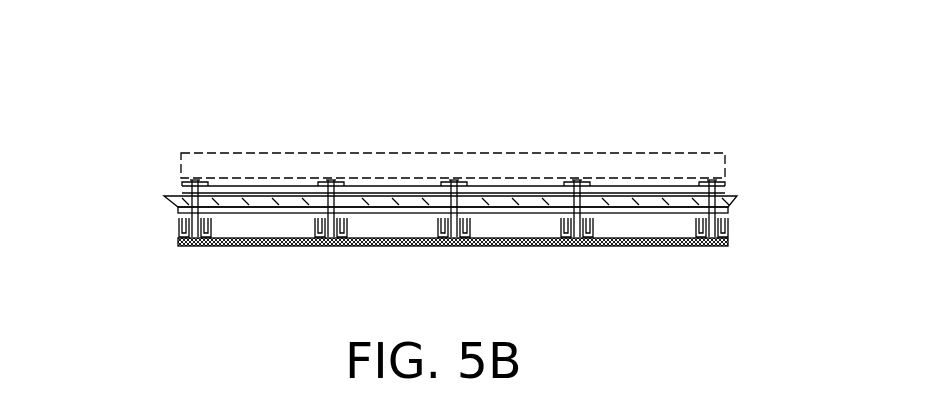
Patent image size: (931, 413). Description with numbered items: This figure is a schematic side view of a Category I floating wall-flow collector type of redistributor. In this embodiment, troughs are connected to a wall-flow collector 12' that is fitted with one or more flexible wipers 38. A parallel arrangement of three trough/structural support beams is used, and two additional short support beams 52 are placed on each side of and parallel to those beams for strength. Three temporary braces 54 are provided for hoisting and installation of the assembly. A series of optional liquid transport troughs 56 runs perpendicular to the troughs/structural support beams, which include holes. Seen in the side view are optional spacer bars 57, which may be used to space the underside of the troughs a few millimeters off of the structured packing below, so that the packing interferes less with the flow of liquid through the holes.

The temporary brace 54 is at (693, 160).
The flexible wiper 38 is at (720, 186).
The wall-flow collector 12' is at (497, 200).
The liquid transport trough 56 is at (178, 223).
The short support beam 52 is at (592, 229).
The spacer bar 57 is at (723, 246).